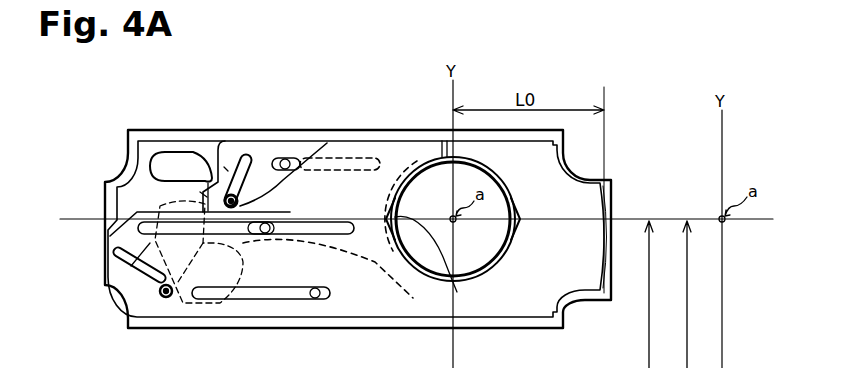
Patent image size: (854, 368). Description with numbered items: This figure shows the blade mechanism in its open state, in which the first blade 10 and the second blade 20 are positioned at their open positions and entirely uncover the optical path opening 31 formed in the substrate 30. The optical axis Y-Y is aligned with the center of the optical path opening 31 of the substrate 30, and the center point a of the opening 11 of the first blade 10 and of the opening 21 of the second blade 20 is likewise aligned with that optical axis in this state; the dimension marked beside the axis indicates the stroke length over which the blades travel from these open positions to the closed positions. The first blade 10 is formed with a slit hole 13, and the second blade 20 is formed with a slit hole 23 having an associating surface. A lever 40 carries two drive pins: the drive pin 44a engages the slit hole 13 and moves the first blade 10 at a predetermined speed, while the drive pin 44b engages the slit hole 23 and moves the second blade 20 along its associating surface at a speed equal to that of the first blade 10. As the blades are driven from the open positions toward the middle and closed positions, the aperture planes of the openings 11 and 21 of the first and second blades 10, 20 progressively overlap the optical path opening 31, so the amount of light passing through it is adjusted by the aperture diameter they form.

The first blade 10 is at (263, 152).
The opening of the first blade 11 is at (520, 215).
The slit hole 13 is at (246, 157).
The second blade 20 is at (262, 305).
The opening of the second blade 21 is at (457, 292).
The slit hole 23 is at (153, 240).
The substrate 30 is at (340, 130).
The optical path opening 31 is at (432, 256).
The lever 40 is at (105, 270).
The drive pin 44a is at (229, 199).
The drive pin 44b is at (166, 298).